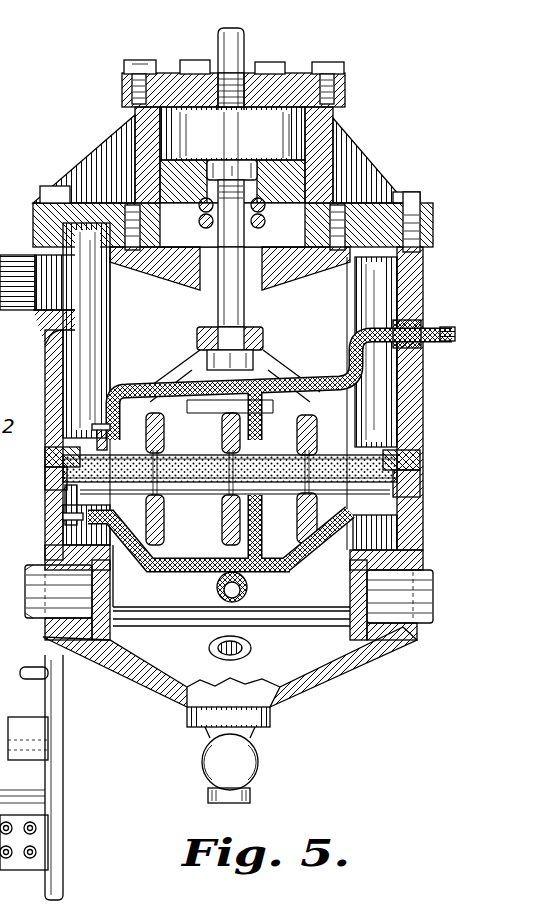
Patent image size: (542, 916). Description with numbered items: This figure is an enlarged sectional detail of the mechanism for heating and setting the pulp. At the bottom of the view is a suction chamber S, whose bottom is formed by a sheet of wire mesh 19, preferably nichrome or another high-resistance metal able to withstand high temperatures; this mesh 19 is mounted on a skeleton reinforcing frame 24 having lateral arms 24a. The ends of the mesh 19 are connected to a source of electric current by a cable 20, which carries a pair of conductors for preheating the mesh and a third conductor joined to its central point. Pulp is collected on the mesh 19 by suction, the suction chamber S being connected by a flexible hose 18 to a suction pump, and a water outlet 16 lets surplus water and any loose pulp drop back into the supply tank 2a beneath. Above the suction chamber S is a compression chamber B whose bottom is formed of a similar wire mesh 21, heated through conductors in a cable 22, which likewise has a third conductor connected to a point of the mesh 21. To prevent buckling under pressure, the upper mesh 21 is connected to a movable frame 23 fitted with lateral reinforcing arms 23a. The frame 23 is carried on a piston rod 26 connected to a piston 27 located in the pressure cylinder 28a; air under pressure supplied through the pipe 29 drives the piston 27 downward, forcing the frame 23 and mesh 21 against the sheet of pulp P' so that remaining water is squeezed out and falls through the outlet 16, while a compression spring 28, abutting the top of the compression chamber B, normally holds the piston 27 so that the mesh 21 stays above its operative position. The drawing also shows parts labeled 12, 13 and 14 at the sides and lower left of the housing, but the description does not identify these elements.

The pipe 29 is at (240, 47).
The pressure cylinder 28a is at (320, 133).
The compression spring 28 is at (270, 200).
The piston 27 is at (200, 173).
The tank 2a is at (5, 258).
The piston rod 26 is at (217, 315).
The compression chamber B is at (311, 305).
The movable frame 23 is at (277, 423).
The cable 22 is at (433, 330).
The wire mesh 21 is at (104, 450).
The lateral reinforcing arms 23a is at (231, 427).
The sheet of pulp P' is at (211, 472).
The wire mesh 19 is at (150, 478).
The lateral arms 24a is at (228, 528).
The skeleton reinforcing frame 24 is at (293, 519).
The cable 20 is at (207, 570).
The suction chamber S is at (177, 652).
The flexible hose 18 is at (251, 648).
The water outlet 16 is at (257, 766).
The pedestal 12 is at (3, 598).
The lug 14 is at (0, 540).
The bracket 13 is at (0, 712).